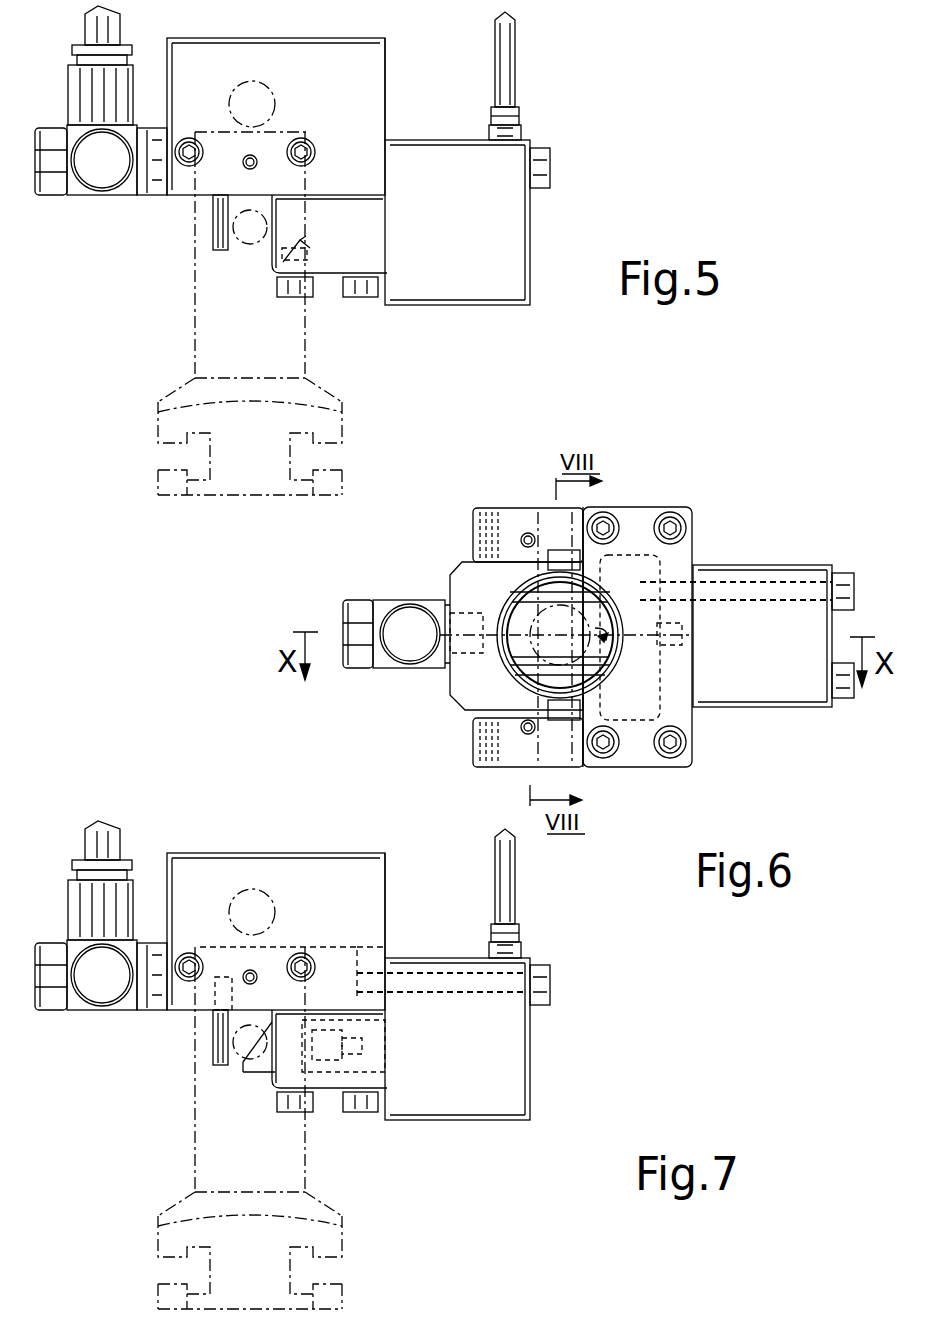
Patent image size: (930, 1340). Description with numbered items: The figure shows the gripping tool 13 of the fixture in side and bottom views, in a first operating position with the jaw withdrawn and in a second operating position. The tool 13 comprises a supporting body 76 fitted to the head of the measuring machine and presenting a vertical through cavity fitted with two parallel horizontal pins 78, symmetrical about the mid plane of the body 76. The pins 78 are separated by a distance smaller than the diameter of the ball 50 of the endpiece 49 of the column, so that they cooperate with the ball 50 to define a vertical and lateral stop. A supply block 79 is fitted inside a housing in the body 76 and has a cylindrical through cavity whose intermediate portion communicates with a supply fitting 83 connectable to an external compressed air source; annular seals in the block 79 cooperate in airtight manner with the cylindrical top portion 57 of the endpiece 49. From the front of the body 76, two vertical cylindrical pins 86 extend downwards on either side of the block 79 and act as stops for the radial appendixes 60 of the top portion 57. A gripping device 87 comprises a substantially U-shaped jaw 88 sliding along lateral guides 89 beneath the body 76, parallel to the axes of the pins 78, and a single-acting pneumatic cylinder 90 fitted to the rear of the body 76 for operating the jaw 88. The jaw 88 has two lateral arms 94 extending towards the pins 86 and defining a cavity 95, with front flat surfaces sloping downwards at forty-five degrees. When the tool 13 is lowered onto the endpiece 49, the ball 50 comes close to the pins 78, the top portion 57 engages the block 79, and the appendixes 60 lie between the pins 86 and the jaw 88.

In FIG. 5, the gripping tool 13 is at (424, 322).
In FIG. 6, the gripping tool 13 is at (705, 514).
In FIG. 7, the gripping tool 13 is at (404, 922).
In FIG. 5, the endpiece 49 is at (190, 356).
In FIG. 7, the endpiece 49 is at (188, 1146).
In FIG. 5, the ball 50 is at (262, 88).
In FIG. 7, the ball 50 is at (248, 900).
In FIG. 5, the top portion 57 is at (300, 360).
In FIG. 7, the top portion 57 is at (318, 1192).
In FIG. 5, the radial appendixes 60 is at (248, 240).
In FIG. 6, the radial appendixes 60 is at (592, 508).
In FIG. 5, the supporting body 76 is at (372, 122).
In FIG. 6, the supporting body 76 is at (515, 518).
In FIG. 7, the supporting body 76 is at (205, 882).
In FIG. 6, the pins 78 is at (508, 610).
In FIG. 5, the supply block 79 is at (150, 185).
In FIG. 6, the supply block 79 is at (462, 678).
In FIG. 7, the supply block 79 is at (158, 1000).
In FIG. 5, the supply fitting 83 is at (103, 172).
In FIG. 6, the supply fitting 83 is at (408, 625).
In FIG. 7, the supply fitting 83 is at (103, 988).
In FIG. 5, the pins 86 is at (216, 242).
In FIG. 6, the pins 86 is at (524, 537).
In FIG. 7, the pins 86 is at (216, 1052).
In FIG. 5, the gripping device 87 is at (330, 290).
In FIG. 7, the gripping device 87 is at (335, 1104).
In FIG. 7, the jaw 88 is at (265, 1088).
In FIG. 5, the lateral guides 89 is at (288, 266).
In FIG. 7, the lateral guides 89 is at (290, 1070).
In FIG. 5, the pneumatic cylinder 90 is at (485, 278).
In FIG. 6, the pneumatic cylinder 90 is at (773, 690).
In FIG. 7, the pneumatic cylinder 90 is at (485, 1092).
In FIG. 6, the lateral arms 94 is at (558, 560).
In FIG. 7, the lateral arms 94 is at (255, 1075).
In FIG. 6, the cavity 95 is at (606, 645).